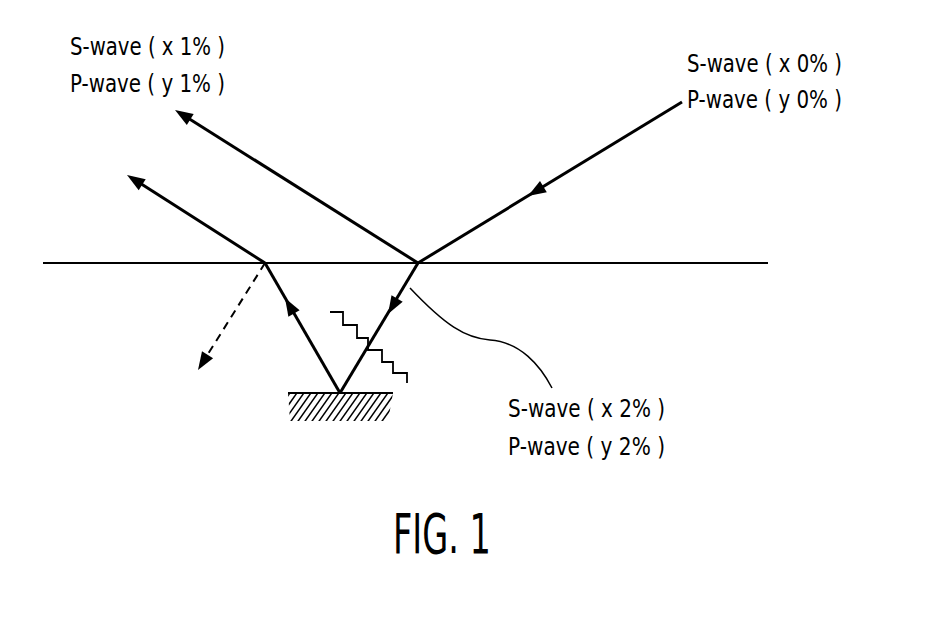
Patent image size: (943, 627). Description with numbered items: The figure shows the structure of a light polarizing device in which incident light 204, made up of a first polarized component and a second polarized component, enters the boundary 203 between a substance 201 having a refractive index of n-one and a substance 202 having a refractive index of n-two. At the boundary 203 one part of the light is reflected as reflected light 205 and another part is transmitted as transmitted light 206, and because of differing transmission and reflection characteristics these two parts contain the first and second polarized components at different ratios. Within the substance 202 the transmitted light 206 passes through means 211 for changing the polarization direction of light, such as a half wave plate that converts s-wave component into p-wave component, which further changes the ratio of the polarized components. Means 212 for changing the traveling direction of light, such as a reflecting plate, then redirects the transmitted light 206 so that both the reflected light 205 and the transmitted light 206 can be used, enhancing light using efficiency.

The substance having refractive index n1 201 is at (673, 229).
The substance having refractive index n2 202 is at (673, 334).
The boundary 203 is at (735, 262).
The light 204 is at (598, 153).
The reflected light 205 is at (258, 160).
The transmitted light 206 is at (380, 326).
The means for changing the polarization direction of light 211 is at (407, 378).
The means for changing the traveling direction of light 212 is at (388, 412).